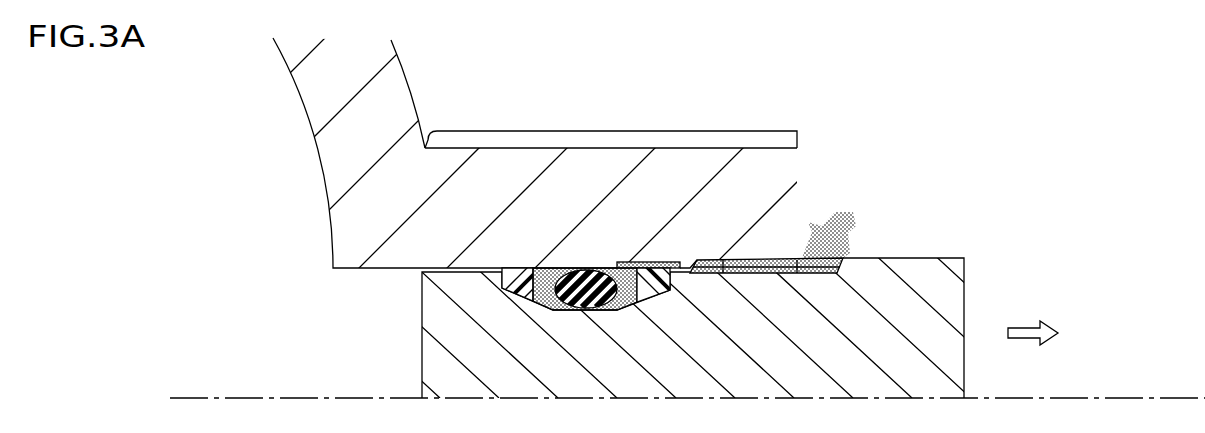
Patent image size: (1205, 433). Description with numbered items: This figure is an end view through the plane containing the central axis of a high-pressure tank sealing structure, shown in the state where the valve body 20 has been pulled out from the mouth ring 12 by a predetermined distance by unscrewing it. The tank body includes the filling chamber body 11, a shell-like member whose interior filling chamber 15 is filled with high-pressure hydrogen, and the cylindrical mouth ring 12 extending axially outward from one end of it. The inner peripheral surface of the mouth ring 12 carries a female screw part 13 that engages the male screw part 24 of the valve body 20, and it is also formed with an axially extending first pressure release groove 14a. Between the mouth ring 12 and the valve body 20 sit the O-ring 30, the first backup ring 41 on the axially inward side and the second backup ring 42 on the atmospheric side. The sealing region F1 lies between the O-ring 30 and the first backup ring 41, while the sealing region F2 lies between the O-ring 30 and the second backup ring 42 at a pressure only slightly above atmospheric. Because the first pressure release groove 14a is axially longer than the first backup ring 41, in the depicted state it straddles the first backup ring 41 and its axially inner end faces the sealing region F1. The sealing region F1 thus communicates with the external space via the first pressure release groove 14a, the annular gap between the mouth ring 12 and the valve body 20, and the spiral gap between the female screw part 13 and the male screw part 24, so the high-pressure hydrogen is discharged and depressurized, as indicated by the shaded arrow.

The filling chamber body 11 is at (400, 85).
The mouth ring 12 is at (597, 131).
The female screw part 13 is at (697, 260).
The first pressure release groove 14a is at (636, 262).
The filling chamber 15 is at (258, 185).
The valve body 20 is at (964, 283).
The male screw part 24 is at (835, 276).
The O-ring 30 is at (590, 276).
The first backup ring 41 is at (658, 284).
The second backup ring 42 is at (515, 268).
The sealing region F1 is at (627, 307).
The sealing region F2 is at (543, 310).